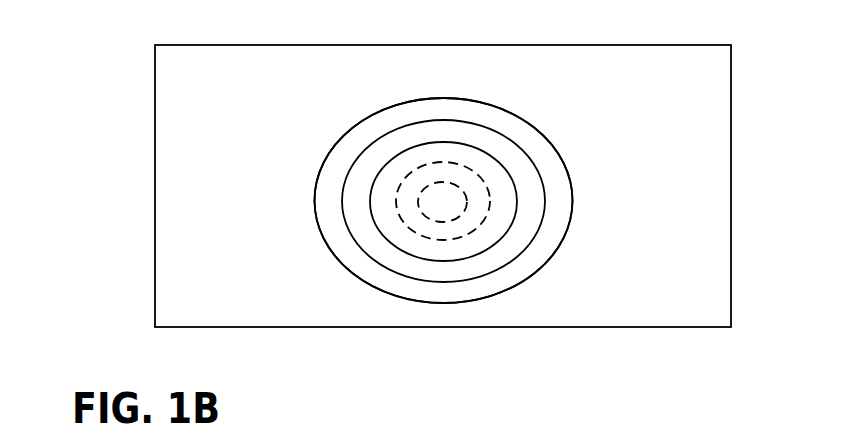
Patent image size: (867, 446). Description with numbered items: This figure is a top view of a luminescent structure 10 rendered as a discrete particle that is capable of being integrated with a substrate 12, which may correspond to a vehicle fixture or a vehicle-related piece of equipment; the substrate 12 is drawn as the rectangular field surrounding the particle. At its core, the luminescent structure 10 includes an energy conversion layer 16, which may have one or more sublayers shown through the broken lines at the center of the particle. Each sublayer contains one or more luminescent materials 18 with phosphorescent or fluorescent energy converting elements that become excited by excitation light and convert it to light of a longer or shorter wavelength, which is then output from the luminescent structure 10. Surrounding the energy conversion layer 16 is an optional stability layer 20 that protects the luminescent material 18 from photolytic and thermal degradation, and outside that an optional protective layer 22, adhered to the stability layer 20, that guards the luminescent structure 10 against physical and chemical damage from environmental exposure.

The luminescent structure 10 is at (357, 108).
The substrate 12 is at (731, 143).
The energy conversion layer 16 is at (493, 243).
The luminescent material 18 is at (430, 215).
The stability layer 20 is at (505, 135).
The protective layer 22 is at (478, 102).